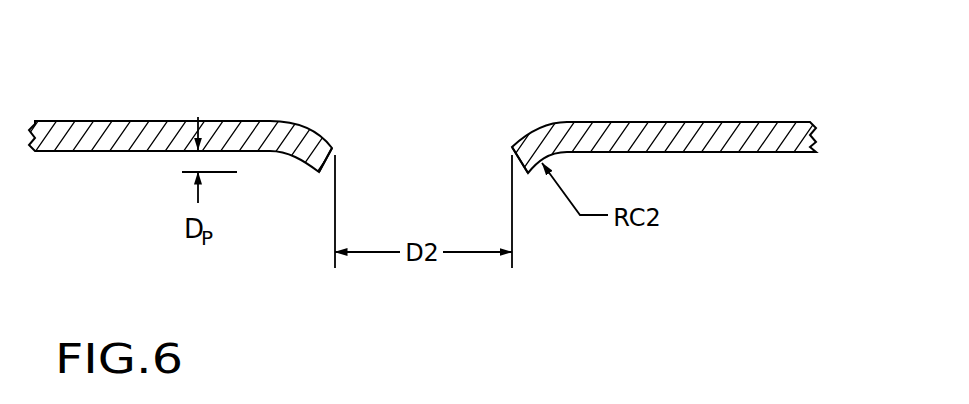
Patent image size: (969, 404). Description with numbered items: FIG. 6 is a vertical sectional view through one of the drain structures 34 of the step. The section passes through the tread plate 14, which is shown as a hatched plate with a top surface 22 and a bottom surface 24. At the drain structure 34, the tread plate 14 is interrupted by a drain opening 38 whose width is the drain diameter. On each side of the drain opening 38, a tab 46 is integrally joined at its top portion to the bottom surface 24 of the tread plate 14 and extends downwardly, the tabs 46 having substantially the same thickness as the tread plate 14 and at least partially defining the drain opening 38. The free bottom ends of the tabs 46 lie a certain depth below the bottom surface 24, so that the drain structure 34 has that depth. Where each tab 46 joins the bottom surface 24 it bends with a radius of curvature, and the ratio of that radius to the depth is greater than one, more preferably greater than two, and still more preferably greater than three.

The tread plate 14 is at (752, 131).
The top surface 22 is at (80, 118).
The bottom surface 24 is at (92, 151).
The drain structure 34 is at (303, 177).
The drain opening 38 is at (419, 157).
The tab 46 is at (331, 146).